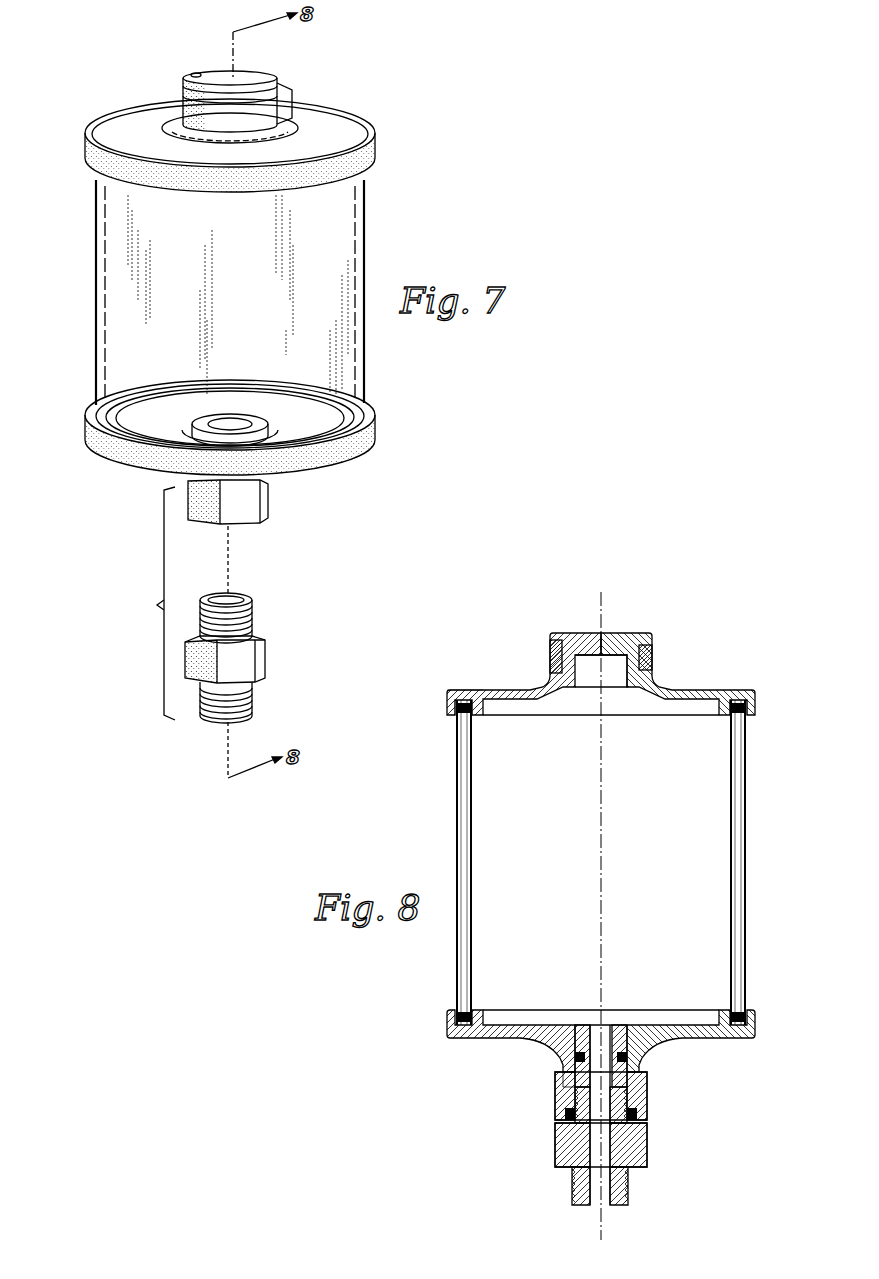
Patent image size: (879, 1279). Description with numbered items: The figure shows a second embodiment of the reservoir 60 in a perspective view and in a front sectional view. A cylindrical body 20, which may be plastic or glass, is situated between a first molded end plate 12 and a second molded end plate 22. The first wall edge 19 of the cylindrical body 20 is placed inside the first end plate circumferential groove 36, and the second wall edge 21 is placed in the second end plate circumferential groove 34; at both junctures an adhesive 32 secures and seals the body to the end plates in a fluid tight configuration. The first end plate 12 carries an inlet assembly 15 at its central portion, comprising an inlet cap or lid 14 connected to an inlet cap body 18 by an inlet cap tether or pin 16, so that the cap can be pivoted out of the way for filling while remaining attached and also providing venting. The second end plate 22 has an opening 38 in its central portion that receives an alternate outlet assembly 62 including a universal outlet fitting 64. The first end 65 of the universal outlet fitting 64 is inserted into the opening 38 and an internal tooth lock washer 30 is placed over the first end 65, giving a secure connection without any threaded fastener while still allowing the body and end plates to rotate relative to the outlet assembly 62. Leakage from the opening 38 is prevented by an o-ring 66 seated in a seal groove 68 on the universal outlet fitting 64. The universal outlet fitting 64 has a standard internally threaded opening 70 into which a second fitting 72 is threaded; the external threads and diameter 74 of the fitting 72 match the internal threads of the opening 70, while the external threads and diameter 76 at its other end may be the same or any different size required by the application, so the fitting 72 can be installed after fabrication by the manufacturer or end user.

In FIG. 7, the first molded end plate 12 is at (350, 128).
In FIG. 8, the first molded end plate 12 is at (617, 645).
In FIG. 7, the inlet cap or lid 14 is at (260, 85).
In FIG. 8, the inlet cap or lid 14 is at (613, 633).
In FIG. 7, the inlet assembly 15 is at (306, 102).
In FIG. 7, the inlet cap tether or pin 16 is at (198, 74).
In FIG. 8, the inlet cap tether or pin 16 is at (557, 638).
In FIG. 7, the inlet cap body 18 is at (183, 112).
In FIG. 8, the inlet cap body 18 is at (652, 658).
In FIG. 8, the first wall edge 19 is at (458, 692).
In FIG. 7, the cylindrical body 20 is at (96, 306).
In FIG. 8, the cylindrical body 20 is at (745, 820).
In FIG. 8, the second wall edge 21 is at (447, 1034).
In FIG. 7, the second molded end plate 22 is at (87, 432).
In FIG. 8, the second molded end plate 22 is at (612, 1054).
In FIG. 8, the internal tooth lock washer 30 is at (572, 1041).
In FIG. 8, the adhesive 32 is at (745, 718).
In FIG. 8, the second end plate circumferential groove 34 is at (757, 1030).
In FIG. 8, the first end plate circumferential groove 36 is at (755, 707).
In FIG. 8, the opening 38 is at (575, 1070).
In FIG. 7, the reservoir 60 is at (88, 89).
In FIG. 8, the reservoir 60 is at (418, 659).
In FIG. 7, the outlet assembly 62 is at (227, 605).
In FIG. 8, the outlet assembly 62 is at (615, 1119).
In FIG. 7, the universal outlet fitting 64 is at (252, 503).
In FIG. 8, the universal outlet fitting 64 is at (647, 1097).
In FIG. 7, the first end 65 is at (243, 423).
In FIG. 8, the first end 65 is at (630, 1042).
In FIG. 8, the o-ring 66 is at (637, 1057).
In FIG. 8, the seal groove 68 is at (573, 1090).
In FIG. 8, the internally threaded opening 70 is at (617, 1110).
In FIG. 7, the fitting 72 is at (248, 665).
In FIG. 8, the fitting 72 is at (553, 1150).
In FIG. 7, the external threads and diameter 74 is at (252, 622).
In FIG. 8, the external threads and diameter 74 is at (575, 1108).
In FIG. 7, the external threads and diameter 76 is at (248, 693).
In FIG. 8, the external threads and diameter 76 is at (570, 1180).